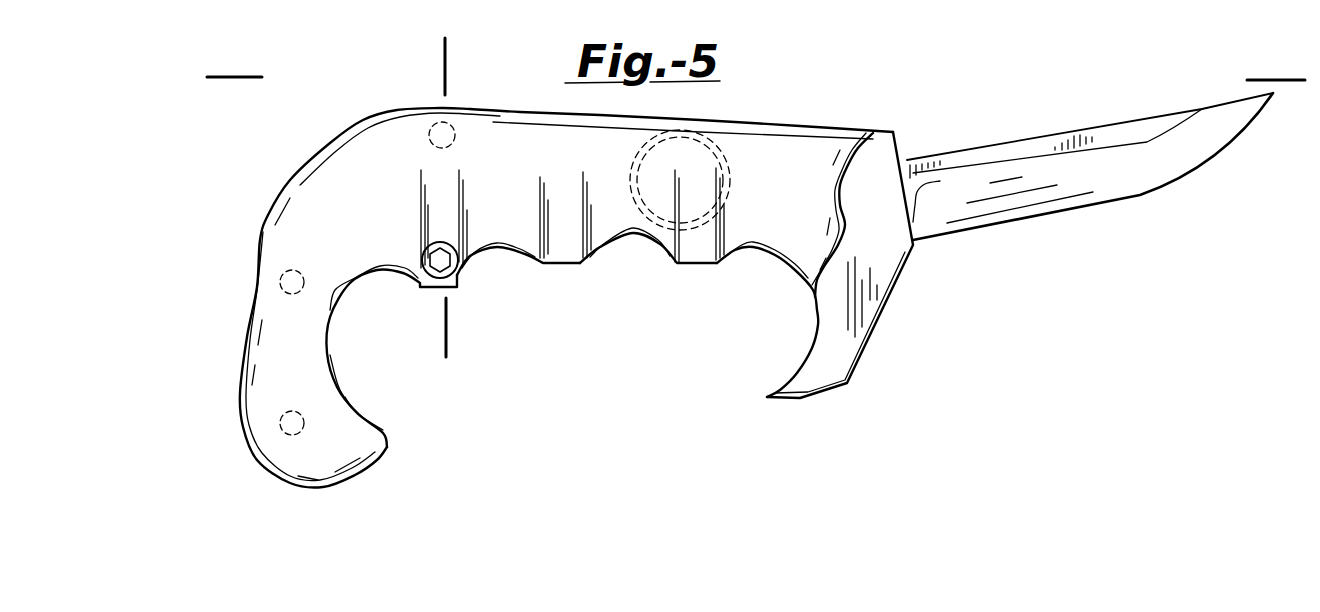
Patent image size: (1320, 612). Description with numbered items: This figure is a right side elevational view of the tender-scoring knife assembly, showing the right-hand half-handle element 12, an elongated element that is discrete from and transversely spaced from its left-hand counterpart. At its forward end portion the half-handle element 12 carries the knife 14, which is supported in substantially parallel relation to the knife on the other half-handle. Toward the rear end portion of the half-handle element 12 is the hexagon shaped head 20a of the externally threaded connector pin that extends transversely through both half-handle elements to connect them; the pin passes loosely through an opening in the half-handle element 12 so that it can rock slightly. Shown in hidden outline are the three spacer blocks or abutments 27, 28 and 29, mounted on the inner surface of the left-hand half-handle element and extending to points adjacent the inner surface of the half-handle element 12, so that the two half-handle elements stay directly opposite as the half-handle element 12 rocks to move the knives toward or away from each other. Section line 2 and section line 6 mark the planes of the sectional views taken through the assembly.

The half-handle element 12 is at (797, 174).
The knife 14 is at (1137, 186).
The hexagon shaped head 20a is at (447, 258).
The spacer block 27 is at (280, 432).
The spacer block 28 is at (280, 283).
The spacer block 29 is at (457, 135).
The section line 2 is at (1297, 125).
The section line 6 is at (448, 347).